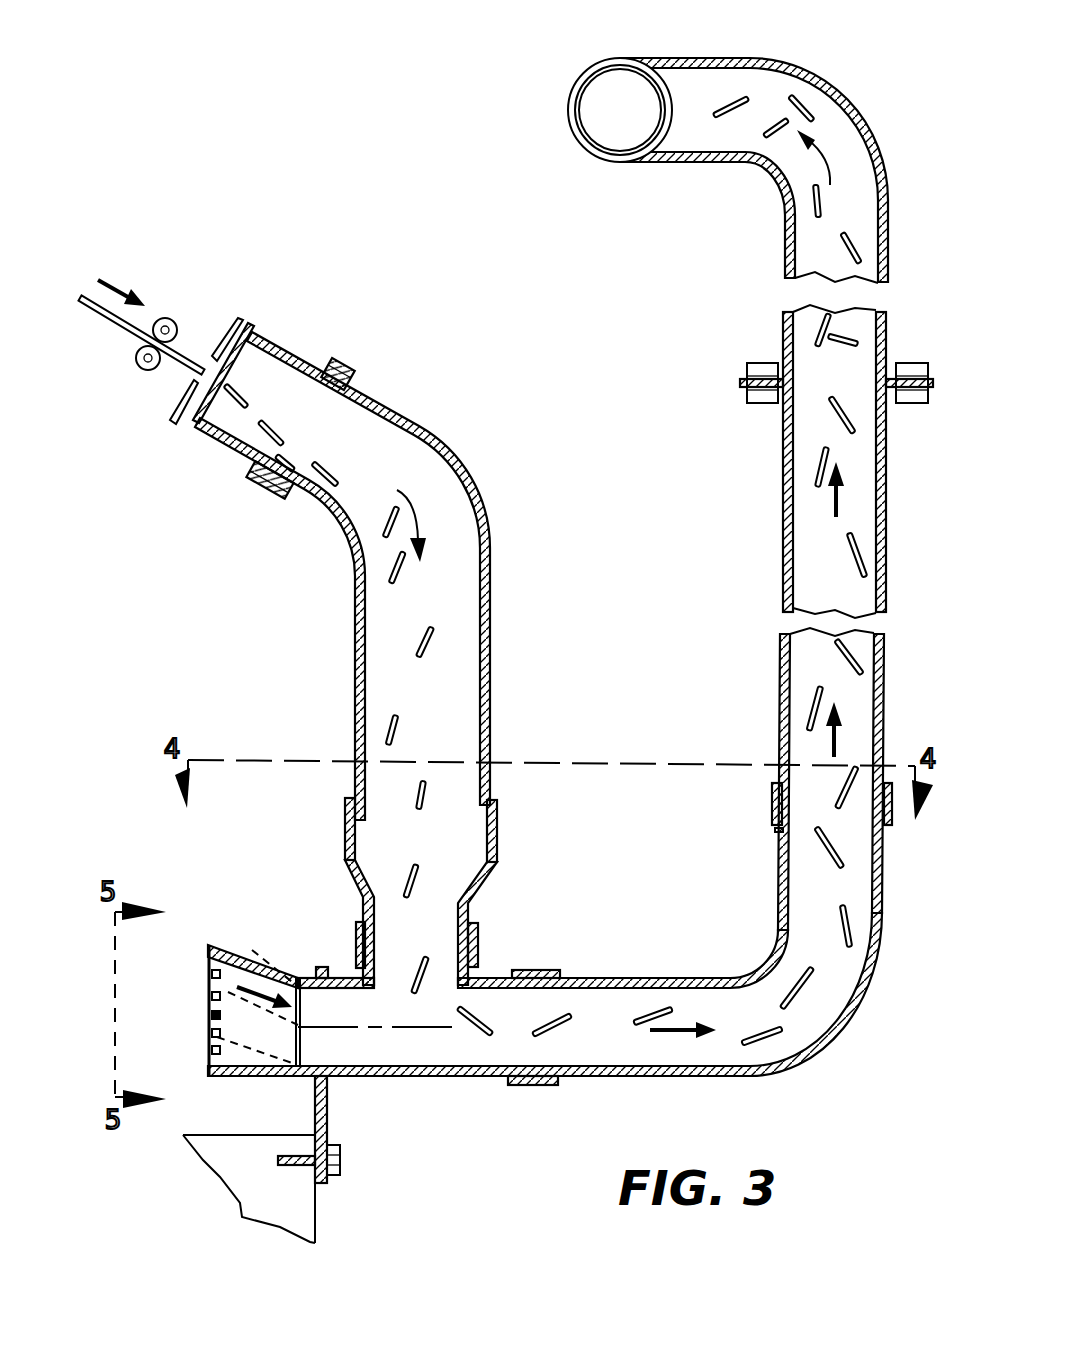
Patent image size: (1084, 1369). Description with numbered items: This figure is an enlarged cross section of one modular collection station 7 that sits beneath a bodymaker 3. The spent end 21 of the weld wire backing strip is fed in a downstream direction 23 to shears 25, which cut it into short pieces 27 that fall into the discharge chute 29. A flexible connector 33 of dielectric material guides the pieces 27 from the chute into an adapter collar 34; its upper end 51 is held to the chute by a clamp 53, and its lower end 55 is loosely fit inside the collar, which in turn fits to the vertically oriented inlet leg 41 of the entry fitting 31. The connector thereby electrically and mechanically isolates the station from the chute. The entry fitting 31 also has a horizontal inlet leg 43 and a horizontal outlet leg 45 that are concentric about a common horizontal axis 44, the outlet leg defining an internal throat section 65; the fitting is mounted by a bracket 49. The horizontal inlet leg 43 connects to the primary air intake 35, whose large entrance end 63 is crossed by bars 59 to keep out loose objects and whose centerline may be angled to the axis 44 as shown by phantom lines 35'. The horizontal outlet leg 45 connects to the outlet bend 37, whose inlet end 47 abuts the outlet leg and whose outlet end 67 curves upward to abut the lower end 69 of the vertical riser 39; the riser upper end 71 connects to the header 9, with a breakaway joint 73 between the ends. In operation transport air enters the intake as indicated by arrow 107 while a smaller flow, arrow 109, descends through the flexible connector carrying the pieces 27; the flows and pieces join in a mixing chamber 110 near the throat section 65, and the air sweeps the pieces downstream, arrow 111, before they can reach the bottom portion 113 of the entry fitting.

The bodymaker 3 is at (328, 1209).
The modular collection station 7 is at (646, 972).
The header 9 is at (566, 103).
The spent end of the weld wire backing strip 21 is at (117, 326).
The downstream direction 23 is at (106, 282).
The shears 25 is at (235, 308).
The pieces of spent weld wire 27 is at (283, 440).
The discharge chute 29 is at (290, 347).
The entry fitting 31 is at (480, 966).
The flexible connector 33 is at (492, 560).
The adapter collar 34 is at (492, 878).
The primary air intake 35 is at (254, 1032).
The angled primary air intake (phantom lines) 35' is at (251, 974).
The outlet bend 37 is at (747, 1084).
The vertical riser 39 is at (770, 670).
The vertically oriented inlet leg 41 is at (462, 954).
The horizontal inlet leg 43 is at (356, 975).
The common horizontal axis 44 is at (360, 1026).
The horizontal outlet leg 45 is at (497, 1078).
The inlet end of the outlet bend 47 is at (556, 1085).
The bracket 49 is at (328, 1112).
The flexible connector upper end 51 is at (300, 498).
The clamp 53 is at (335, 362).
The lower end of the flexible connector 55 is at (488, 818).
The bars 59 is at (214, 995).
The entrance end of the primary air intake 63 is at (209, 1014).
The internal throat section 65 is at (476, 1012).
The outlet end of the outlet bend 67 is at (783, 832).
The lower end of the riser 69 is at (775, 790).
The riser upper end 71 is at (707, 78).
The breakaway joint 73 is at (742, 383).
The transport air arrow 107 is at (243, 985).
The air flow arrow through flexible connector 109 is at (420, 507).
The mixing chamber 110 is at (436, 1057).
The downstream direction arrow 111 is at (652, 1032).
The bottom portion of the entry fitting 113 is at (413, 1077).